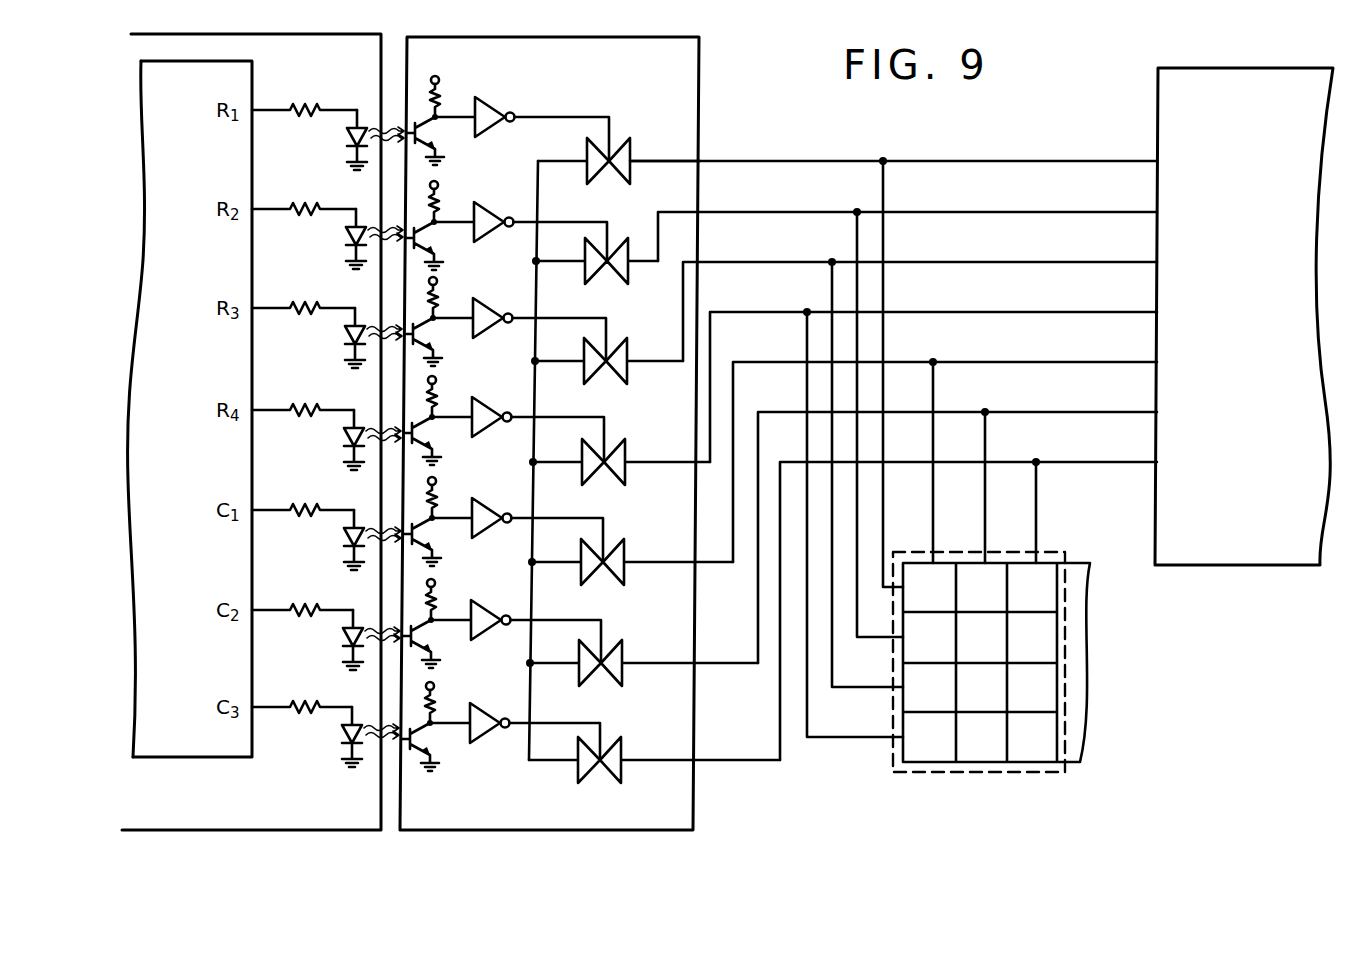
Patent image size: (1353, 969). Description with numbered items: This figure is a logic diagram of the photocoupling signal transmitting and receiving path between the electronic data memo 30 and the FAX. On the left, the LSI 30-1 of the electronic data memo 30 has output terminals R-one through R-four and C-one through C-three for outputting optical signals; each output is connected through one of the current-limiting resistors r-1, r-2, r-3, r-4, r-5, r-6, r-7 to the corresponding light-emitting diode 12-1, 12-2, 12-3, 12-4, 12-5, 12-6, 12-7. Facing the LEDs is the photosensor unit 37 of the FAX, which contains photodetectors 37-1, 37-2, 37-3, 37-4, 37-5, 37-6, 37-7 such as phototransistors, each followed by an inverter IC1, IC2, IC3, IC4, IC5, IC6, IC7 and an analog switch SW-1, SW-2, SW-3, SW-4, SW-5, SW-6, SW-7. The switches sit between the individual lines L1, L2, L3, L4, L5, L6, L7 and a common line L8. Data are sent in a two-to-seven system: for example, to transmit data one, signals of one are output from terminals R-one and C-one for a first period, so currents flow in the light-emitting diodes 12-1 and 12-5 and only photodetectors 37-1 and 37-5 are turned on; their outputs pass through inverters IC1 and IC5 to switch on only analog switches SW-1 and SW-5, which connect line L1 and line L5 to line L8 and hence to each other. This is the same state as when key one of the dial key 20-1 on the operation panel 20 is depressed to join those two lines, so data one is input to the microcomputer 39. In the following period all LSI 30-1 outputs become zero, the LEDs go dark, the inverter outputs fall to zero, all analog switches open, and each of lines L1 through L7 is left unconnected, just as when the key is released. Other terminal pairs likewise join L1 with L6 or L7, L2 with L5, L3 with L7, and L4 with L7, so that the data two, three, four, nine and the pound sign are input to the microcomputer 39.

The electronic data memo 30 is at (137, 832).
The LSI 30-1 is at (142, 190).
The current-limiting resistor r-1 is at (304, 95).
The current-limiting resistor r-2 is at (304, 194).
The current-limiting resistor r-3 is at (303, 293).
The current-limiting resistor r-4 is at (303, 395).
The current-limiting resistor r-5 is at (303, 495).
The current-limiting resistor r-6 is at (302, 595).
The current-limiting resistor r-7 is at (302, 692).
The light-emitting diode 12-1 is at (346, 136).
The light-emitting diode 12-2 is at (345, 235).
The light-emitting diode 12-3 is at (344, 334).
The light-emitting diode 12-4 is at (343, 436).
The light-emitting diode 12-5 is at (343, 536).
The light-emitting diode 12-6 is at (342, 636).
The light-emitting diode 12-7 is at (341, 733).
The photosensor unit 37 is at (693, 822).
The photodetector 37-1 is at (441, 135).
The photodetector 37-2 is at (440, 240).
The photodetector 37-3 is at (439, 336).
The photodetector 37-4 is at (438, 435).
The photodetector 37-5 is at (438, 536).
The photodetector 37-6 is at (437, 638).
The photodetector 37-7 is at (436, 741).
The inverter IC1 is at (522, 119).
The inverter IC2 is at (520, 221).
The inverter IC3 is at (519, 319).
The inverter IC4 is at (518, 419).
The inverter IC5 is at (517, 520).
The inverter IC6 is at (516, 621).
The inverter IC7 is at (515, 721).
The analog switch SW-1 is at (619, 176).
The analog switch SW-2 is at (597, 276).
The analog switch SW-3 is at (609, 376).
The analog switch SW-4 is at (621, 477).
The analog switch SW-5 is at (632, 577).
The analog switch SW-6 is at (644, 678).
The analog switch SW-7 is at (654, 775).
The line L1 is at (1053, 161).
The line L2 is at (1053, 212).
The line L3 is at (1053, 262).
The line L4 is at (1053, 312).
The line L5 is at (1053, 362).
The line L6 is at (1053, 412).
The line L7 is at (1053, 462).
The line L8 is at (548, 763).
The operation panel 20 is at (1082, 684).
The dial key 20-1 is at (1052, 772).
The microcomputer 39 is at (1268, 567).